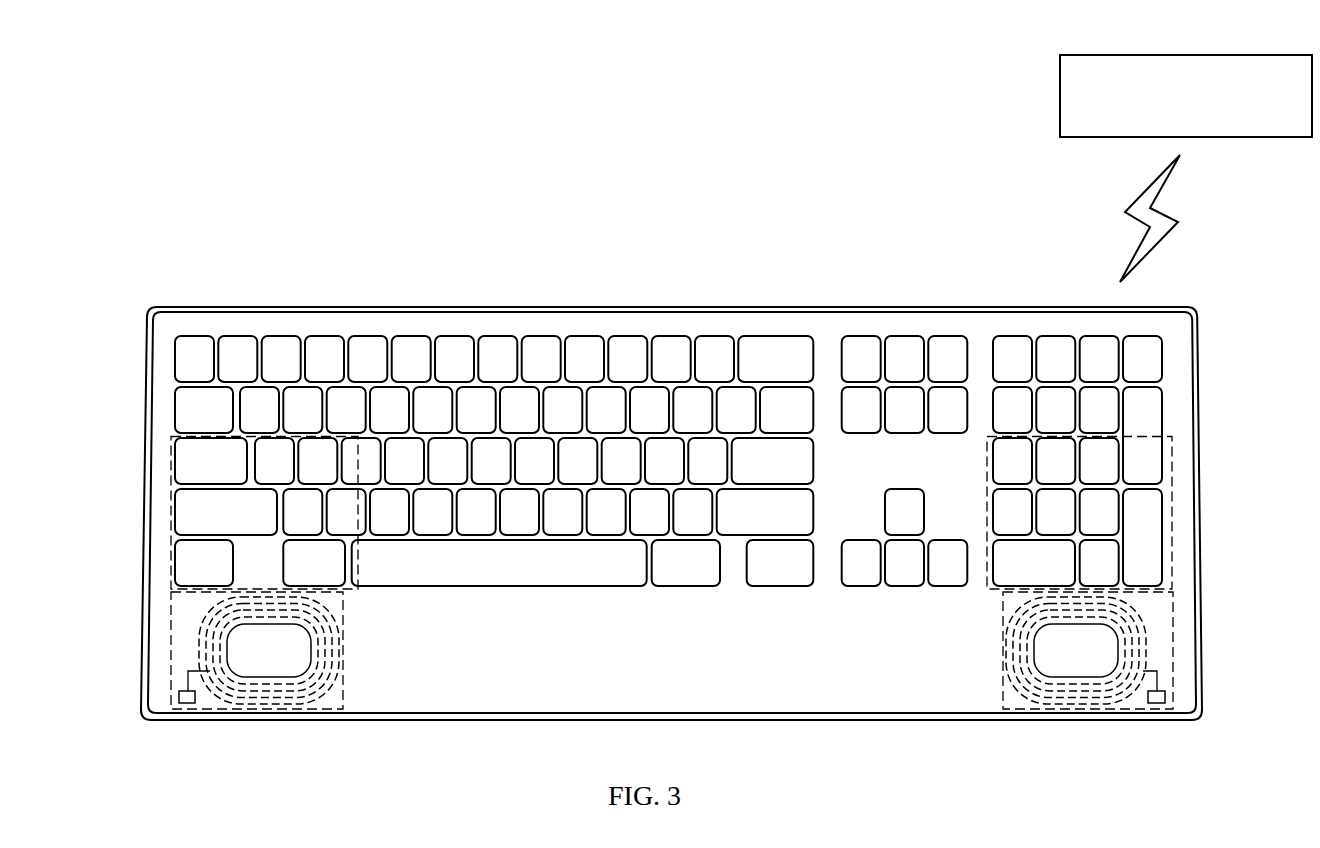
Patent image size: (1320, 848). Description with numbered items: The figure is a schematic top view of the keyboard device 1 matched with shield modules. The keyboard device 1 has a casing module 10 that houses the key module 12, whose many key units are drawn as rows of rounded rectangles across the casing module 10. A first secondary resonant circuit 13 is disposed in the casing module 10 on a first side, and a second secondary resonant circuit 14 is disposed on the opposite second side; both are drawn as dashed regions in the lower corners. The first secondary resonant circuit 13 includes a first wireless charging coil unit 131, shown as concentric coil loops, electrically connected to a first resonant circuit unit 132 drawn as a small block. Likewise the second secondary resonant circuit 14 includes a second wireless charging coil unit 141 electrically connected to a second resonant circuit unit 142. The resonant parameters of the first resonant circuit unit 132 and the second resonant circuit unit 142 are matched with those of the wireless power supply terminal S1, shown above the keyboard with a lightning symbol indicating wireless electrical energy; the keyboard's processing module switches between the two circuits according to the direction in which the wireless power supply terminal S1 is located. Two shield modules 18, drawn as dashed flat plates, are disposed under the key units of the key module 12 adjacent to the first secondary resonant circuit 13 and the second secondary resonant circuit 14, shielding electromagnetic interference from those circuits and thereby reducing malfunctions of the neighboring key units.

The keyboard device 1 is at (1197, 303).
The casing module 10 is at (1195, 507).
The key module 12 is at (625, 348).
The first secondary resonant circuit 13 is at (1174, 622).
The first wireless charging coil unit 131 is at (1146, 653).
The first resonant circuit unit 132 is at (1166, 696).
The second secondary resonant circuit 14 is at (170, 622).
The second wireless charging coil unit 141 is at (196, 652).
The second resonant circuit unit 142 is at (178, 694).
The shield module 18 is at (171, 477).
The wireless power supply terminal S1 is at (1207, 55).